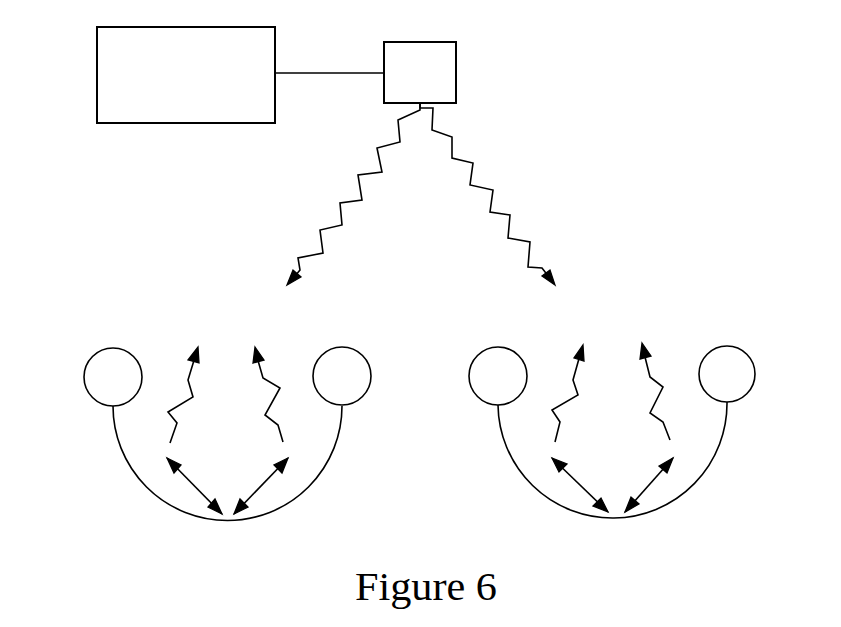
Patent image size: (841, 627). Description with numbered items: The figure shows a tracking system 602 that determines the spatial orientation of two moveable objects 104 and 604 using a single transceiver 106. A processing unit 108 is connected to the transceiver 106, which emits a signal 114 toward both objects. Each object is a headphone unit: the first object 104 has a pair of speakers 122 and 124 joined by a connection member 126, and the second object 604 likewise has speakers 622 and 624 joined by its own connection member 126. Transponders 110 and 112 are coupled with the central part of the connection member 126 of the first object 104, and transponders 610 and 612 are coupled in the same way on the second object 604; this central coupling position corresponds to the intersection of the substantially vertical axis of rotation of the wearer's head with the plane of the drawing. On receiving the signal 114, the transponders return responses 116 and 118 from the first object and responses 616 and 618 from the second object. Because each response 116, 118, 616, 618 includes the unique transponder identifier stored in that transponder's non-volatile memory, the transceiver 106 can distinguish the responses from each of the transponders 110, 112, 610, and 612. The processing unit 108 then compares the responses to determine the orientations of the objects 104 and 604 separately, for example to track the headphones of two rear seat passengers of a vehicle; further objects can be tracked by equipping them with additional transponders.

The moveable object 104 is at (225, 428).
The transceiver 106 is at (456, 68).
The processing unit 108 is at (188, 123).
The transponder 110 is at (190, 488).
The transponder 112 is at (263, 488).
The signal 114 is at (340, 209).
The response 116 is at (180, 400).
The response 118 is at (278, 388).
The speaker 122 is at (87, 355).
The speaker 124 is at (353, 343).
The connection member 126 is at (333, 457).
The tracking system 602 is at (633, 157).
The moveable object 604 is at (624, 420).
The transponder 610 is at (577, 485).
The transponder 612 is at (650, 487).
The response 616 is at (563, 398).
The response 618 is at (663, 387).
The speaker 622 is at (498, 347).
The speaker 624 is at (738, 343).